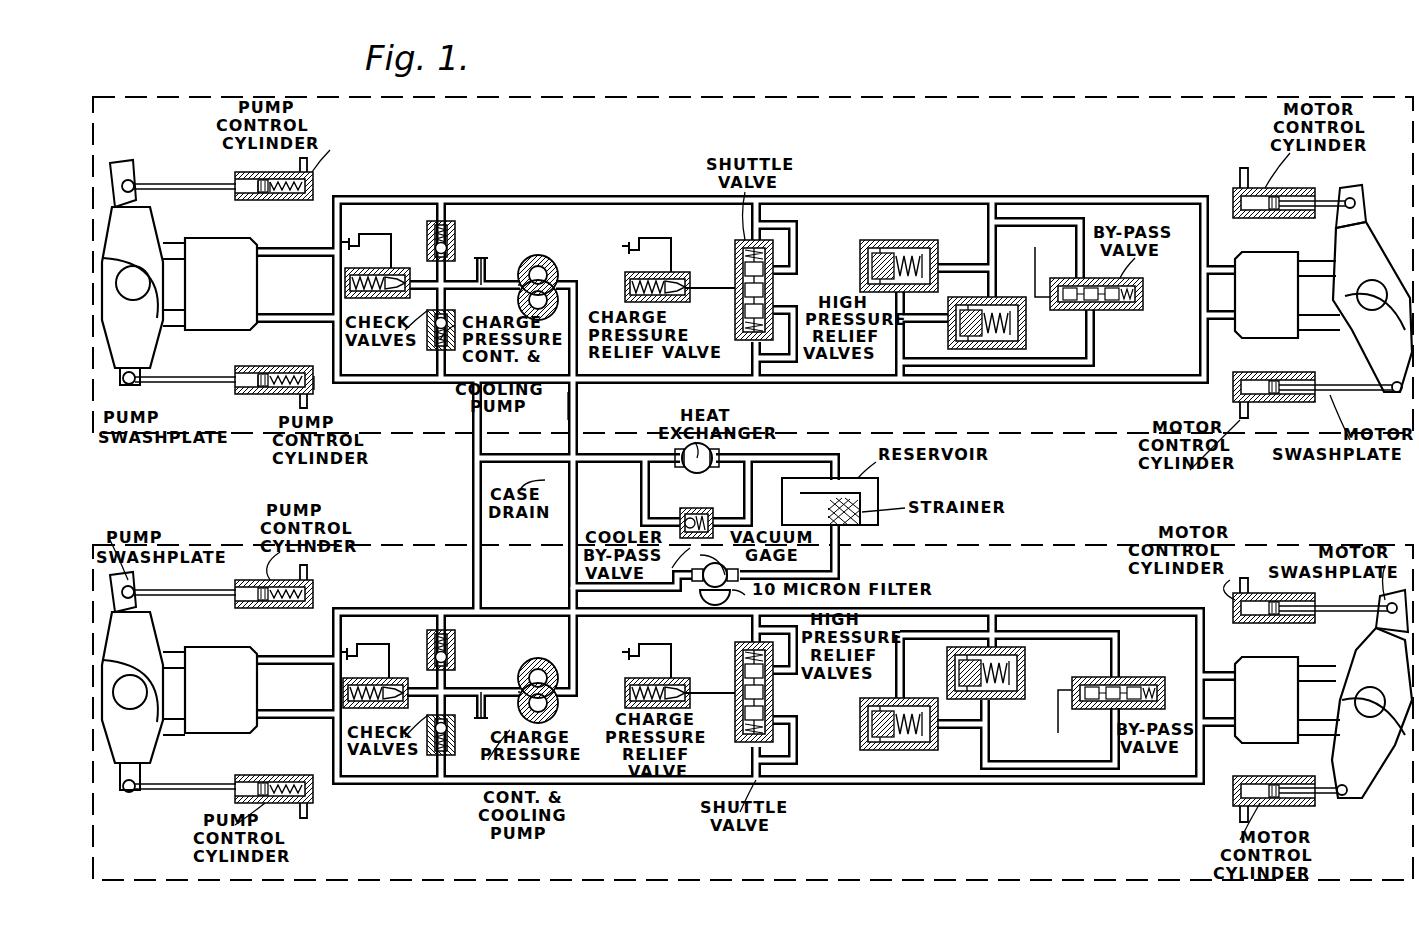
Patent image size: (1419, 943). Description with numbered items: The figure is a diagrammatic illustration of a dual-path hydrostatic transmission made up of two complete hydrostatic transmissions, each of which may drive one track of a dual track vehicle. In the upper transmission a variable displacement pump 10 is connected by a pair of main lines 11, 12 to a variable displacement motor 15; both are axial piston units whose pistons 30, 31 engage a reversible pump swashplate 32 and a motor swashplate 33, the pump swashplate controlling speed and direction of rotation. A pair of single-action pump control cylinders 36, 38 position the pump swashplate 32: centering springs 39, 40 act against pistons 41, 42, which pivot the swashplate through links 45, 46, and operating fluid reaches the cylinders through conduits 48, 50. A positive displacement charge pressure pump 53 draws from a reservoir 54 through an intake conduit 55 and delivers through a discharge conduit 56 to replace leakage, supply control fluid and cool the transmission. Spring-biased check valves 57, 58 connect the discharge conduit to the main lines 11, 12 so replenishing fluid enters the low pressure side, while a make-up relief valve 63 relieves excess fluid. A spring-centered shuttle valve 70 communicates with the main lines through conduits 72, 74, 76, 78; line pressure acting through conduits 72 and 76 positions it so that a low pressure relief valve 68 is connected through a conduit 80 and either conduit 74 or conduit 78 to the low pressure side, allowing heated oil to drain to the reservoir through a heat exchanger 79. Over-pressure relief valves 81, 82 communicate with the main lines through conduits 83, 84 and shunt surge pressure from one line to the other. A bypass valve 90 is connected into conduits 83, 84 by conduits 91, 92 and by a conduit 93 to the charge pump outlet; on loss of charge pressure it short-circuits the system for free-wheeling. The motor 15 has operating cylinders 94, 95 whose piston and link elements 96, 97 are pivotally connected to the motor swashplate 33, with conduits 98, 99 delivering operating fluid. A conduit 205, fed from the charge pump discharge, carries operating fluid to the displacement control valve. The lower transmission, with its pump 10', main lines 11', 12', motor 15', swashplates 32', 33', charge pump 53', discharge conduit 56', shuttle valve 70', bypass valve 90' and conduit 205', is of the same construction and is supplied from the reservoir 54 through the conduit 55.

The variable displacement pump 10 is at (241, 279).
The main line 11 is at (753, 265).
The main line 12 is at (746, 309).
The variable displacement motor 15 is at (1258, 283).
The pump pistons 30 is at (172, 245).
The motor pistons 31 is at (1318, 262).
The pump swashplate 32 is at (139, 272).
The motor swashplate 33 is at (1372, 288).
The pump control cylinder 36 is at (316, 186).
The pump control cylinder 38 is at (316, 388).
The spring construction 39 is at (278, 196).
The spring construction 40 is at (270, 368).
The piston 41 is at (258, 195).
The piston 42 is at (262, 370).
The link 45 is at (200, 182).
The link 46 is at (195, 385).
The conduit 48 is at (308, 165).
The conduit 50 is at (300, 404).
The charge pressure pump 53 is at (559, 270).
The reservoir 54 is at (878, 484).
The intake conduit 55 is at (580, 406).
The discharge conduit 56 is at (517, 257).
The check valve 57 is at (430, 235).
The check valve 58 is at (458, 320).
The make-up relief valve 63 is at (345, 286).
The low pressure relief valve 68 is at (670, 268).
The shuttle valve 70 is at (785, 290).
The conduit 72 is at (765, 213).
The conduit 74 is at (793, 245).
The conduit 76 is at (752, 365).
The conduit 78 is at (793, 308).
The heat exchanger 79 is at (702, 462).
The conduit 80 is at (705, 295).
The over-pressure relief valve 81 is at (895, 242).
The over-pressure relief valve 82 is at (1026, 333).
The conduit 83 is at (990, 250).
The conduit 84 is at (897, 355).
The bypass valve 90 is at (1111, 304).
The conduit 91 is at (1082, 237).
The conduit 92 is at (1095, 360).
The conduit 93 is at (1032, 270).
The motor operating cylinder 94 is at (1233, 196).
The motor operating cylinder 95 is at (1258, 375).
The piston and link element 96 is at (1328, 200).
The piston and link element 97 is at (1340, 392).
The conduit 98 is at (1240, 172).
The conduit 99 is at (1240, 408).
The conduit 205 is at (484, 250).
The variable displacement pump 10' is at (228, 679).
The main line 11' is at (753, 712).
The main line 12' is at (746, 718).
The variable displacement motor 15' is at (1276, 683).
The pump swashplate 32' is at (169, 682).
The motor swashplate 33' is at (1363, 694).
The charge pressure pump 53' is at (535, 673).
The discharge conduit 56' is at (494, 674).
The shuttle valve 70' is at (875, 724).
The bypass valve 90' is at (1112, 686).
The conduit 205' is at (445, 754).